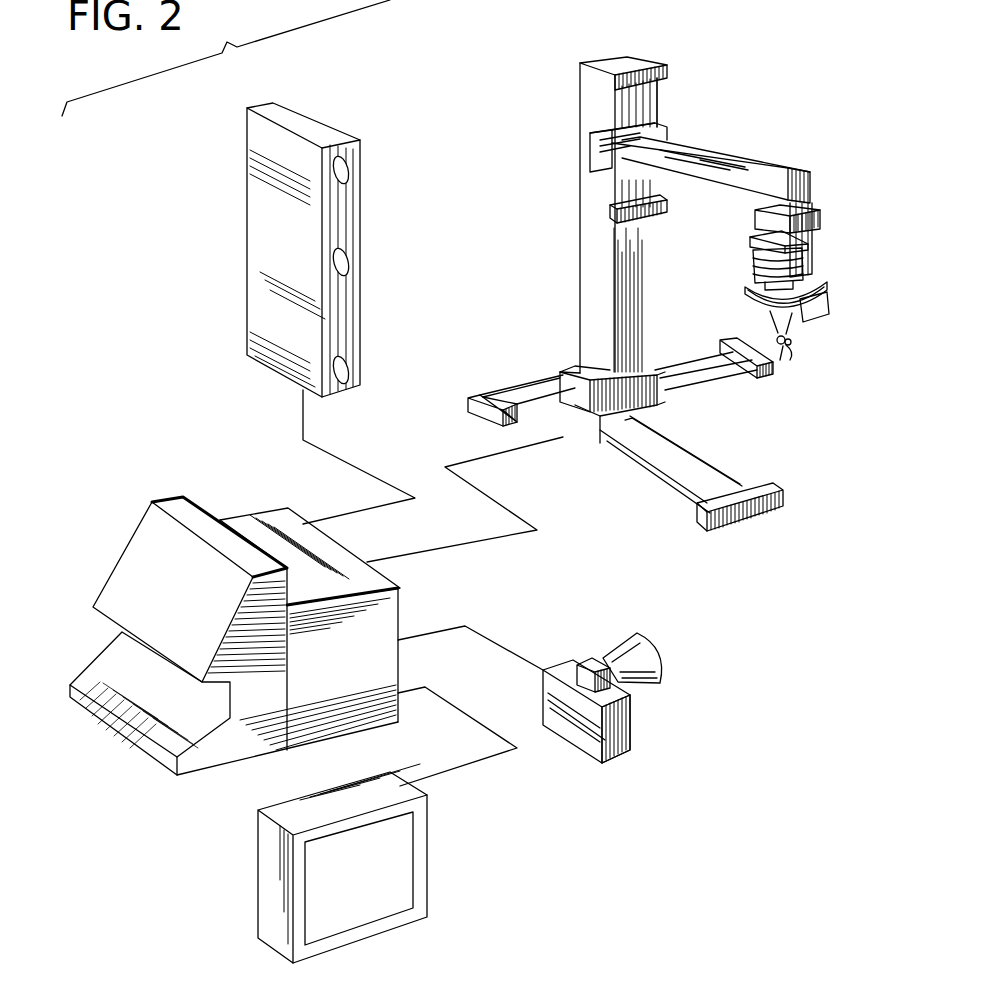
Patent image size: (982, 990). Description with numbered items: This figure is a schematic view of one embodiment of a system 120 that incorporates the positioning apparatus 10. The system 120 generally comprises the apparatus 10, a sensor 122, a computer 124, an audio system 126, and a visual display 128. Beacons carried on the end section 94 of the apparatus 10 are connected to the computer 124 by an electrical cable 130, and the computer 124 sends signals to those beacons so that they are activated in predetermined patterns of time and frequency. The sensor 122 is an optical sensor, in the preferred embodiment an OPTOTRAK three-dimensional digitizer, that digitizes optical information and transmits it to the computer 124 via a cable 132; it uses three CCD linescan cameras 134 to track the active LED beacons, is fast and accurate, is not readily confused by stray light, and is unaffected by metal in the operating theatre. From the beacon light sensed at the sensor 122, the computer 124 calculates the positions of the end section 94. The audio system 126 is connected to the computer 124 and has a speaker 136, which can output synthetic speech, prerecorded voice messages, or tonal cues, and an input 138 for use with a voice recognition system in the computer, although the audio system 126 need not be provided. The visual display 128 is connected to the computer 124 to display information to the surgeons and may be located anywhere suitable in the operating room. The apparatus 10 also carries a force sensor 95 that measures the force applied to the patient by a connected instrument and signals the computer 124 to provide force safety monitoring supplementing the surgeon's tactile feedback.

The apparatus 10 is at (727, 157).
The end section 94 is at (792, 335).
The force sensor 95 is at (777, 350).
The system 120 is at (645, 822).
The sensor 122 is at (297, 123).
The computer 124 is at (130, 537).
The audio system 126 is at (633, 743).
The visual display 128 is at (427, 875).
The electrical cable 130 is at (497, 540).
The cable 132 is at (320, 447).
The CCD linescan cameras 134 is at (348, 366).
The speaker 136 is at (650, 647).
The input 138 is at (637, 713).